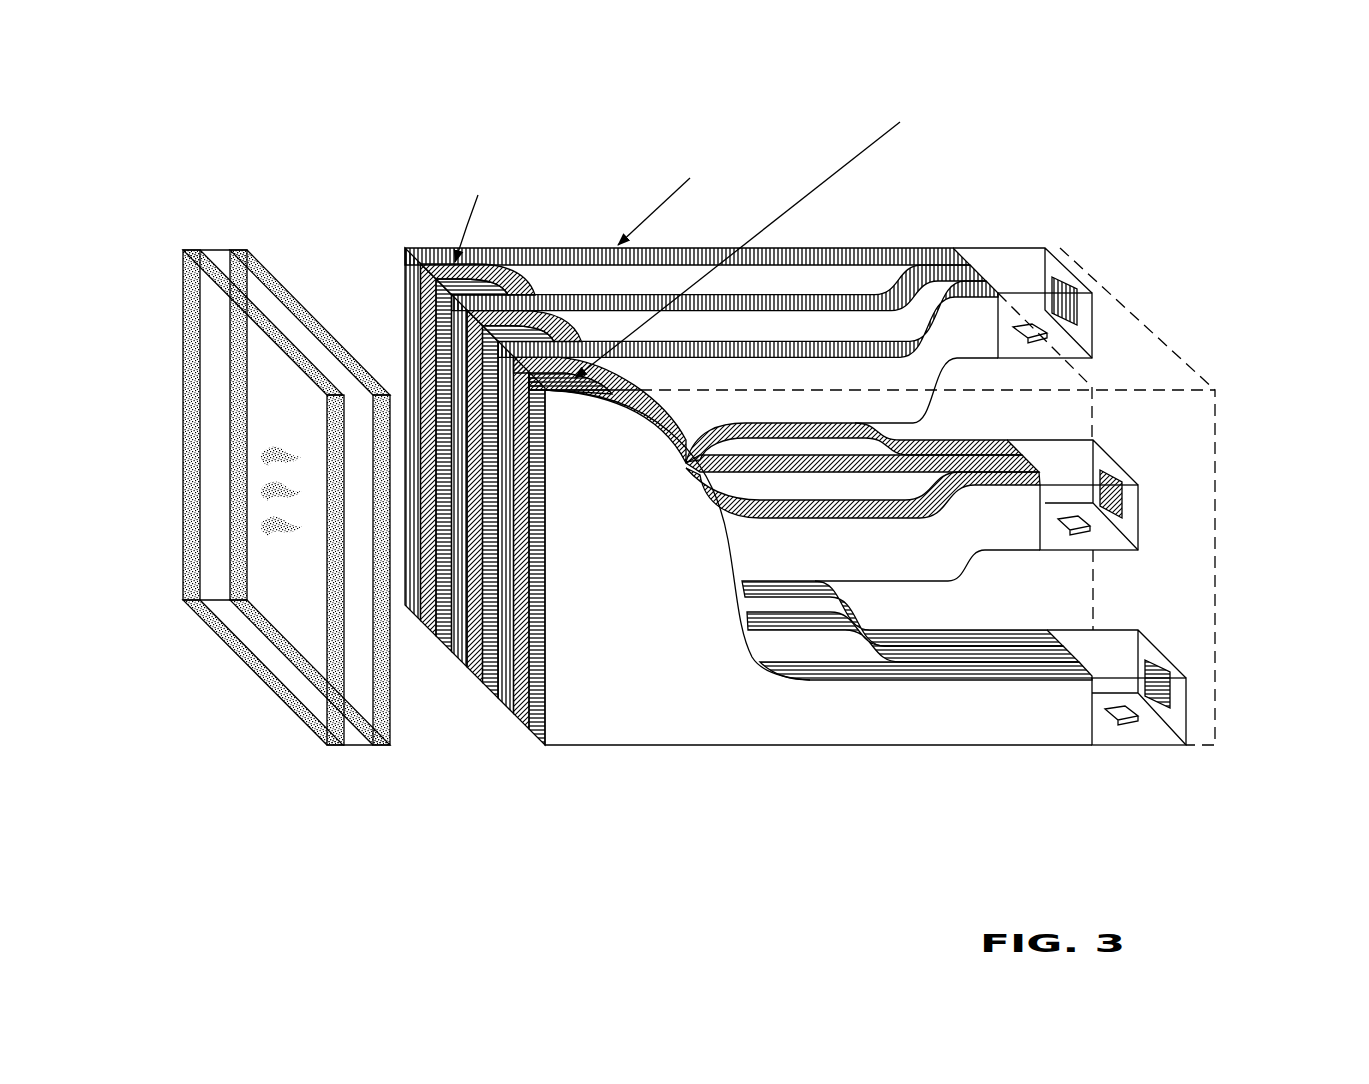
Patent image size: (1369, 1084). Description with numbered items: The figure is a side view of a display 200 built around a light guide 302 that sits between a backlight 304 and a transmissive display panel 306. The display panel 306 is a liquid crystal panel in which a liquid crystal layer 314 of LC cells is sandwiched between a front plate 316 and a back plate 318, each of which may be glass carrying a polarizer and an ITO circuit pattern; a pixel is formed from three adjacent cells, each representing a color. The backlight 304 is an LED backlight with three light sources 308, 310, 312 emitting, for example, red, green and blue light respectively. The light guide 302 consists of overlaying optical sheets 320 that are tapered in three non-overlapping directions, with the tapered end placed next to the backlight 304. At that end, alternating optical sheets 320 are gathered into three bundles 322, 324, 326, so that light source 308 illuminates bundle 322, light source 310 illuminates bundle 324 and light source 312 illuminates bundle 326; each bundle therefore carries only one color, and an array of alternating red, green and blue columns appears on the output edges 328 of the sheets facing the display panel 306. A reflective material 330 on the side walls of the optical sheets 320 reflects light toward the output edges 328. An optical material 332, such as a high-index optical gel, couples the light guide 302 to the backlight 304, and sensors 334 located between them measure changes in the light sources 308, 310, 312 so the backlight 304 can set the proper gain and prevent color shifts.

The display 200 is at (672, 82).
The light guide 302 is at (866, 494).
The backlight 304 is at (1222, 545).
The transmissive display panel 306 is at (242, 453).
The light source 308 is at (1062, 293).
The light source 310 is at (1112, 483).
The light source 312 is at (1157, 700).
The liquid crystal layer 314 is at (231, 402).
The front plate 316 is at (216, 675).
The back plate 318 is at (283, 275).
The optical sheets 320 is at (522, 238).
The bundle 322 is at (935, 237).
The bundle 324 is at (884, 460).
The bundle 326 is at (978, 711).
The output edges 328 is at (483, 697).
The reflective material 330 is at (622, 692).
The optical material 332 is at (1045, 236).
The sensors 334 is at (1117, 718).